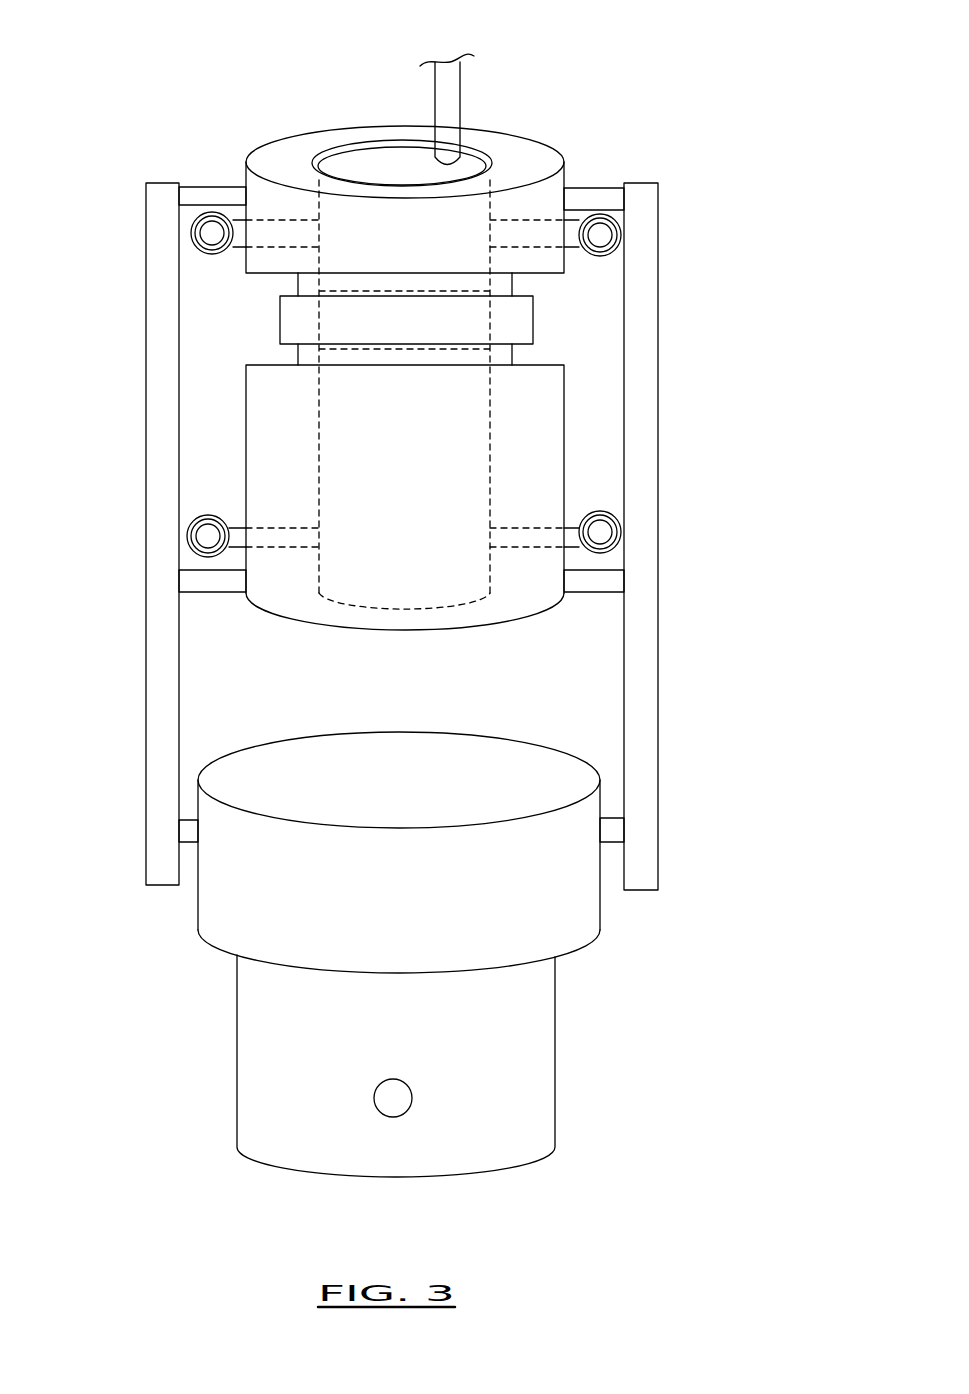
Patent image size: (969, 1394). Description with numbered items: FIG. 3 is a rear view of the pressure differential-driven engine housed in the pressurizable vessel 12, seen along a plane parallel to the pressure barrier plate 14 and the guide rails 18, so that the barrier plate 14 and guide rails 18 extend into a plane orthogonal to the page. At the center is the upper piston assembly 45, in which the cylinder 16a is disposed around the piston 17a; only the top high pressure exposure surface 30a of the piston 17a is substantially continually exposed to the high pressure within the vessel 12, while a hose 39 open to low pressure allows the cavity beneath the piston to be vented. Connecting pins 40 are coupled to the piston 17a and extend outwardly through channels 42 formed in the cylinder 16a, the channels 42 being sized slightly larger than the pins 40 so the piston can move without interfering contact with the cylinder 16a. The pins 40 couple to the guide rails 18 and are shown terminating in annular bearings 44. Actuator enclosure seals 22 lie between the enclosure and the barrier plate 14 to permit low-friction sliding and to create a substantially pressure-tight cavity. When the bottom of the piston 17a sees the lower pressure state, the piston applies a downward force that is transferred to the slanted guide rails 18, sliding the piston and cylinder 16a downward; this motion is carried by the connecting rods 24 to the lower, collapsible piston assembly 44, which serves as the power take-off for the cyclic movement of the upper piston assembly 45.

The pressurizable enclosure or vessel 12 is at (761, 1153).
The pressure barrier plate 14 is at (533, 325).
The cylinder 16a is at (537, 160).
The piston 17a is at (358, 163).
The guide or support rails 18 is at (213, 233).
The actuator enclosure seals 22 is at (512, 287).
The connecting rods 24 is at (146, 650).
The high pressure exposure surface 30a is at (403, 163).
The hose 39 is at (463, 68).
The connecting pins 40 is at (243, 187).
The channels 42 is at (267, 248).
The annular bearings / collapsible piston assembly 44 is at (212, 254).
The upper piston assembly 45 is at (273, 100).